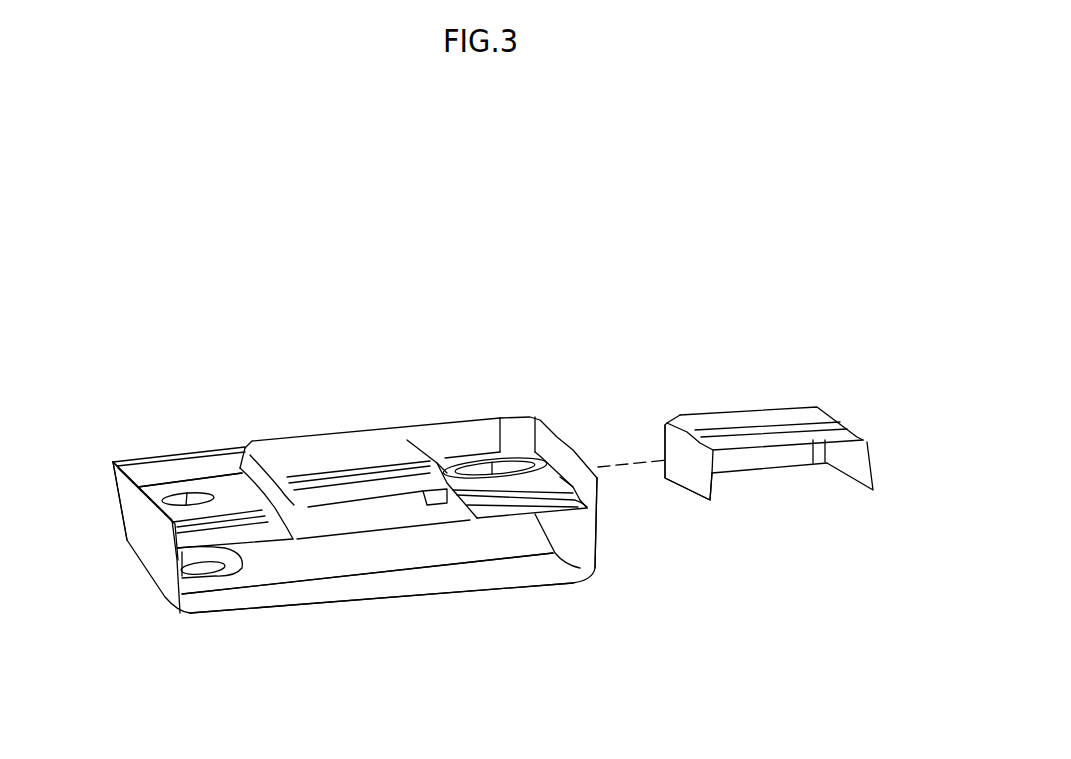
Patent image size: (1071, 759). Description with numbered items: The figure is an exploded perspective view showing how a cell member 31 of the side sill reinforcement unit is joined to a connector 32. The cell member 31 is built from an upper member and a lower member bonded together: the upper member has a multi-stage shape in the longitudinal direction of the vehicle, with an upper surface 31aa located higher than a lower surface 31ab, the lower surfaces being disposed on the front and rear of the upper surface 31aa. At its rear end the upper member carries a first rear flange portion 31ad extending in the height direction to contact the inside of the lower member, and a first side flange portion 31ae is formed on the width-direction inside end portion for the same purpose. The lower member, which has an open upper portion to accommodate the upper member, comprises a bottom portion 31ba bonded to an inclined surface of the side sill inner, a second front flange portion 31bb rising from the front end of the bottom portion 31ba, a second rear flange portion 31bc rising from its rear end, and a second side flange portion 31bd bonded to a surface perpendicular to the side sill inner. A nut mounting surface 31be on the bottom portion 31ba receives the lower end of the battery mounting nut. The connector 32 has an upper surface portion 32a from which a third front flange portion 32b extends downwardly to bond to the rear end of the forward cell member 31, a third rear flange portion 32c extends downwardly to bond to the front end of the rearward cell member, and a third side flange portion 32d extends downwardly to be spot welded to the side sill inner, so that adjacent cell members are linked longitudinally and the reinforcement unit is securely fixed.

The cell member 31 is at (453, 404).
The upper surface 31aa is at (347, 443).
The lower surface 31ab is at (227, 500).
The first rear flange portion 31ad is at (548, 420).
The first side flange portion 31ae is at (438, 495).
The bottom portion 31ba is at (347, 557).
The second front flange portion 31bb is at (153, 565).
The second rear flange portion 31bc is at (583, 542).
The second side flange portion 31bd is at (165, 462).
The nut mounting surface 31be is at (213, 570).
The connector 32 is at (807, 390).
The upper surface portion 32a is at (747, 427).
The third front flange portion 32b is at (687, 475).
The third rear flange portion 32c is at (853, 458).
The third side flange portion 32d is at (770, 457).